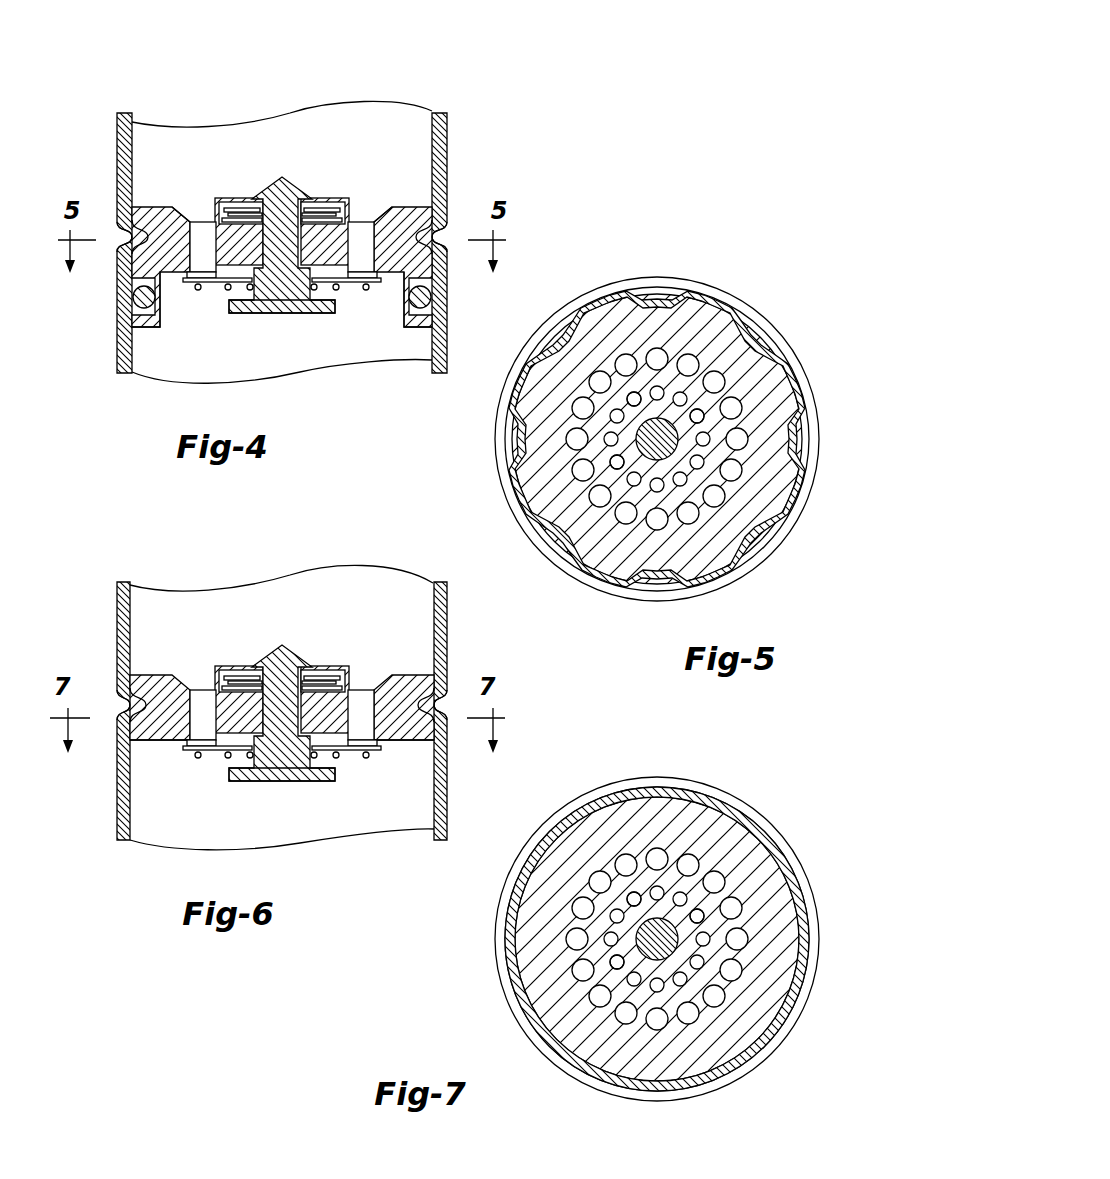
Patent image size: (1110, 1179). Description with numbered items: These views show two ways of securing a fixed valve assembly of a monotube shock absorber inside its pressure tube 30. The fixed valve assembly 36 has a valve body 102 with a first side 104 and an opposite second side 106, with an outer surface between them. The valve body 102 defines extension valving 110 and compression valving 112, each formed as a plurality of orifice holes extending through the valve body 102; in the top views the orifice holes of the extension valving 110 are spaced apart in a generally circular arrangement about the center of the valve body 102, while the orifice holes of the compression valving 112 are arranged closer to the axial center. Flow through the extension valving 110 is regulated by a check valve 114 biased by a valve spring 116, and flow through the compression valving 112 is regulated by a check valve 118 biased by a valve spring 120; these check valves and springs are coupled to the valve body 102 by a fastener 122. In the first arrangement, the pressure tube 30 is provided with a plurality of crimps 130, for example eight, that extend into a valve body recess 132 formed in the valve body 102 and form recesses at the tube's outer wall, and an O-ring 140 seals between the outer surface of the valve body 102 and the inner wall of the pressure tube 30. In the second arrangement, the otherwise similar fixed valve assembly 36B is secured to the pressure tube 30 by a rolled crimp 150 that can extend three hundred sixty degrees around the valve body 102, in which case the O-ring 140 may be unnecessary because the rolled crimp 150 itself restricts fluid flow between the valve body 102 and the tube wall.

In FIG. 4, the pressure tube 30 is at (118, 127).
In FIG. 6, the pressure tube 30 is at (118, 594).
In FIG. 5, the pressure tube 30 is at (743, 300).
In FIG. 7, the pressure tube 30 is at (743, 802).
In FIG. 4, the fixed valve assembly 36 is at (248, 240).
In FIG. 6, the fixed valve assembly 36B is at (275, 678).
In FIG. 4, the valve body 102 is at (156, 207).
In FIG. 6, the valve body 102 is at (156, 675).
In FIG. 5, the valve body 102 is at (657, 439).
In FIG. 7, the valve body 102 is at (657, 939).
In FIG. 4, the first side 104 is at (172, 207).
In FIG. 6, the first side 104 is at (172, 675).
In FIG. 4, the second side 106 is at (143, 340).
In FIG. 6, the second side 106 is at (153, 742).
In FIG. 4, the extension valving 110 is at (365, 245).
In FIG. 6, the extension valving 110 is at (364, 712).
In FIG. 5, the extension valving 110 is at (658, 350).
In FIG. 7, the extension valving 110 is at (658, 850).
In FIG. 4, the compression valving 112 is at (330, 216).
In FIG. 6, the compression valving 112 is at (330, 684).
In FIG. 5, the compression valving 112 is at (632, 393).
In FIG. 7, the compression valving 112 is at (632, 893).
In FIG. 4, the check valve 114 is at (243, 283).
In FIG. 6, the check valve 114 is at (241, 748).
In FIG. 4, the valve spring 116 is at (199, 290).
In FIG. 6, the valve spring 116 is at (197, 758).
In FIG. 4, the check valve 118 is at (238, 214).
In FIG. 6, the check valve 118 is at (238, 682).
In FIG. 4, the valve spring 120 is at (243, 213).
In FIG. 6, the valve spring 120 is at (243, 681).
In FIG. 4, the fastener 122 is at (283, 180).
In FIG. 6, the fastener 122 is at (283, 648).
In FIG. 5, the fastener 122 is at (658, 428).
In FIG. 7, the fastener 122 is at (658, 928).
In FIG. 4, the crimps 130 is at (127, 238).
In FIG. 5, the crimps 130 is at (655, 294).
In FIG. 4, the valve body recess 132 is at (172, 210).
In FIG. 4, the O-ring 140 is at (136, 297).
In FIG. 6, the rolled crimp 150 is at (127, 706).
In FIG. 7, the rolled crimp 150 is at (657, 939).